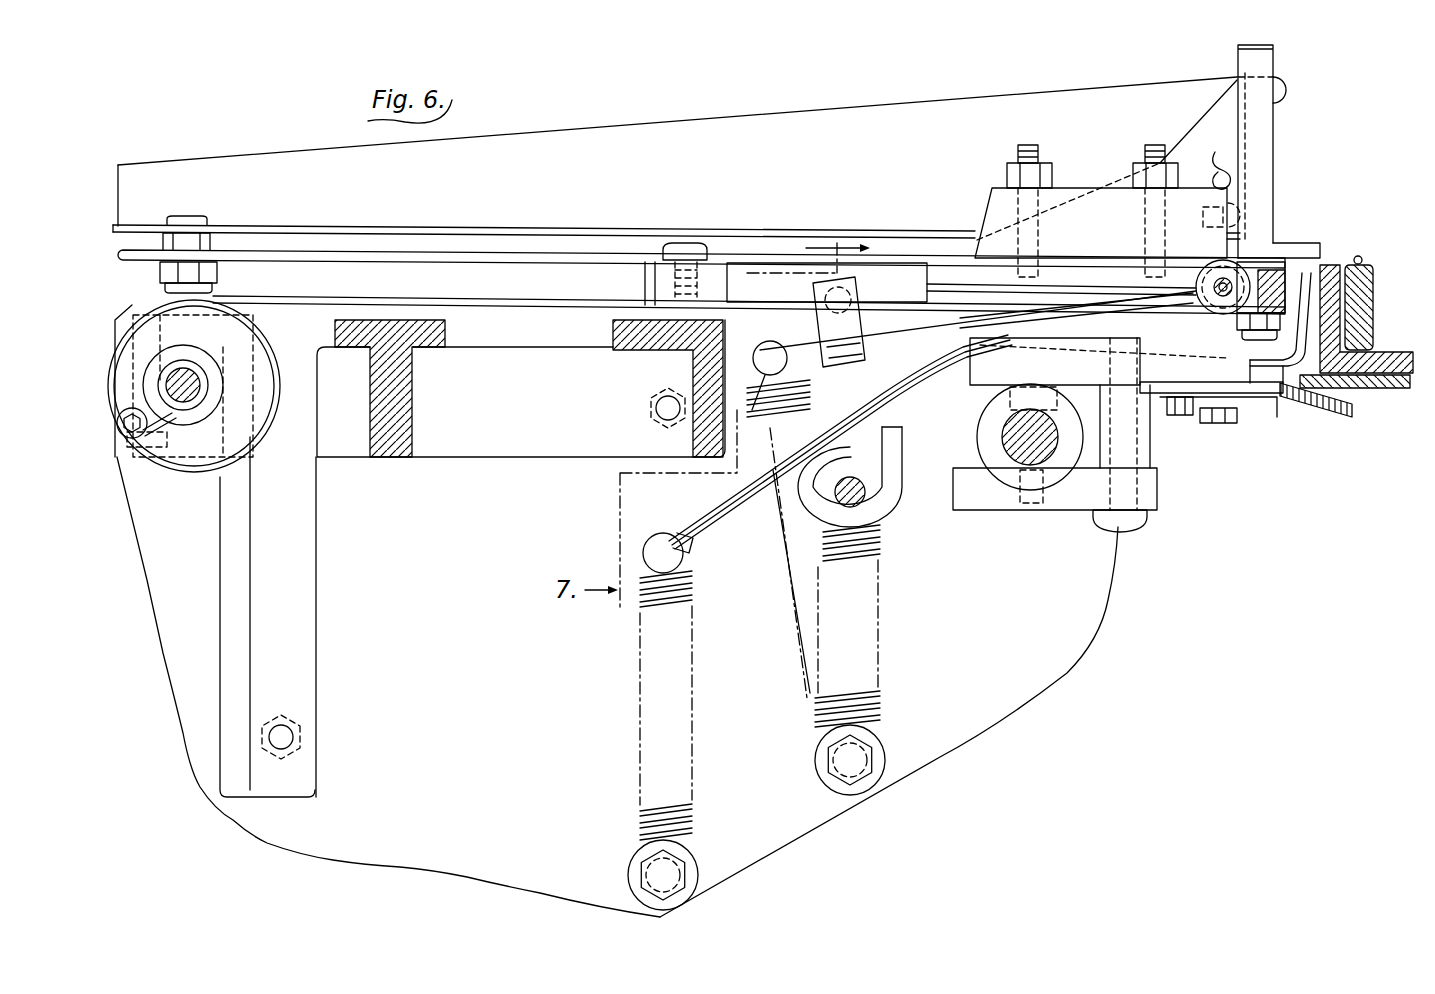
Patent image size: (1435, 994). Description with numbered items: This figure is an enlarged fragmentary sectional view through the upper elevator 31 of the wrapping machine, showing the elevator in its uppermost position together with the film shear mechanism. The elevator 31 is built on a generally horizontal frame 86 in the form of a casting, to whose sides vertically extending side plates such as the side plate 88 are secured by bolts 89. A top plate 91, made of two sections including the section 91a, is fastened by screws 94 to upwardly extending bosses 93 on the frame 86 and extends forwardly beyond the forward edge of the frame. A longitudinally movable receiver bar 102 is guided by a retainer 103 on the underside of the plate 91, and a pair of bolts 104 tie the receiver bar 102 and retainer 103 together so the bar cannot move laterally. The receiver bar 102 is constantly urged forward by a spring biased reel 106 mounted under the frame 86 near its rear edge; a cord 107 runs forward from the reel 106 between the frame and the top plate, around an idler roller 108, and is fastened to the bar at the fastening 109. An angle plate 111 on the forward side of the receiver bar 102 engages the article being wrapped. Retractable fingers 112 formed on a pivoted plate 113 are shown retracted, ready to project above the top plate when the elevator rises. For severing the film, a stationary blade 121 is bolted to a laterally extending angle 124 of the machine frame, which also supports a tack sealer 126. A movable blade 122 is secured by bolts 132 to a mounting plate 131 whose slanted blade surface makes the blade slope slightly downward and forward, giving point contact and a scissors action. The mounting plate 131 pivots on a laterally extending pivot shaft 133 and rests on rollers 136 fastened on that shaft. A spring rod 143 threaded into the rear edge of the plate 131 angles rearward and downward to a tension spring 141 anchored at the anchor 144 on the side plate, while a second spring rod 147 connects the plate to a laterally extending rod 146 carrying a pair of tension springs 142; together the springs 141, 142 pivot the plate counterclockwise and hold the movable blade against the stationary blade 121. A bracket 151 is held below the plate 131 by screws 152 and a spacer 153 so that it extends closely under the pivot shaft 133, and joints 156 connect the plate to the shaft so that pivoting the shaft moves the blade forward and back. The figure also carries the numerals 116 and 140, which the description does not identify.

The upper elevator 31 is at (1072, 685).
The frame 86 is at (395, 458).
The side plate 88 is at (498, 678).
The bolts 89 is at (286, 735).
The top plate 91 is at (499, 252).
The top plate section 91a is at (307, 255).
The bosses 93 is at (650, 282).
The screws 94 is at (698, 244).
The receiver bar 102 is at (974, 188).
The retainer 103 is at (937, 287).
The bolts 104 is at (1140, 172).
The spring biased reel 106 is at (193, 468).
The cord 107 is at (490, 305).
The idler roller 108 is at (1216, 276).
The cord fastening 109 is at (1232, 185).
The angle plate 111 is at (1283, 250).
The retractable fingers 112 is at (1308, 307).
The plate 113 is at (844, 340).
The top plate 116 is at (740, 158).
The stationary blade 121 is at (1400, 389).
The movable blade 122 is at (1293, 410).
The angle 124 is at (1385, 352).
The tack sealer 126 is at (1389, 262).
The mounting plate 131 is at (982, 381).
The bolts 132 is at (1192, 418).
The pivot shaft 133 is at (1058, 447).
The rollers 136 is at (992, 437).
The spring 140 is at (768, 567).
The tension spring 141 is at (638, 767).
The tension springs 142 is at (878, 643).
The spring rod 143 is at (722, 506).
The spring anchor 144 is at (690, 882).
The laterally extending rod 146 is at (868, 480).
The second spring rod 147 is at (868, 500).
The bracket 151 is at (1158, 497).
The screws 152 is at (1132, 528).
The spacer 153 is at (1150, 452).
The joints 156 is at (870, 383).